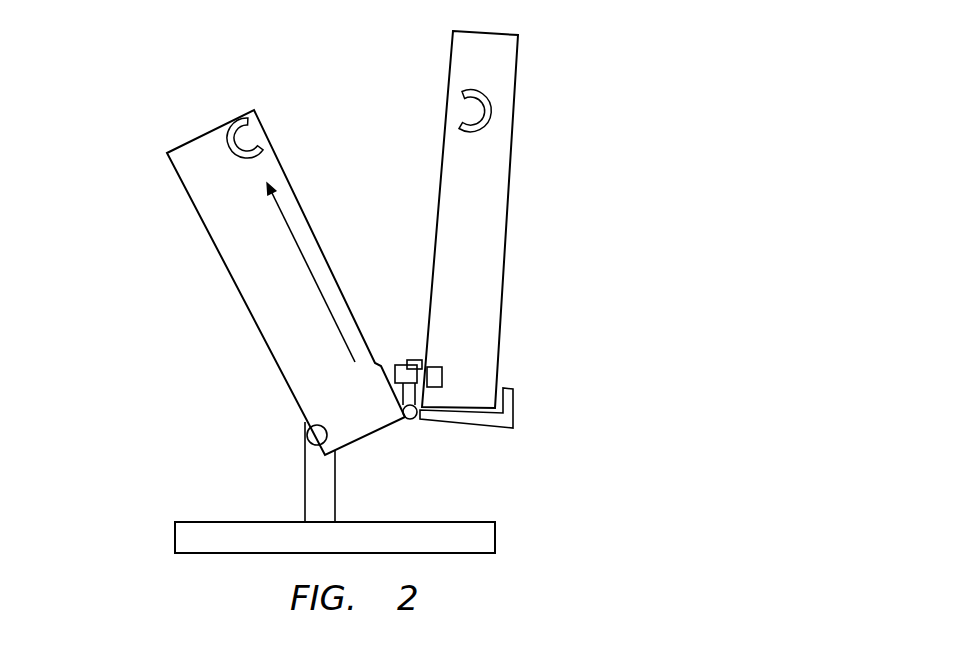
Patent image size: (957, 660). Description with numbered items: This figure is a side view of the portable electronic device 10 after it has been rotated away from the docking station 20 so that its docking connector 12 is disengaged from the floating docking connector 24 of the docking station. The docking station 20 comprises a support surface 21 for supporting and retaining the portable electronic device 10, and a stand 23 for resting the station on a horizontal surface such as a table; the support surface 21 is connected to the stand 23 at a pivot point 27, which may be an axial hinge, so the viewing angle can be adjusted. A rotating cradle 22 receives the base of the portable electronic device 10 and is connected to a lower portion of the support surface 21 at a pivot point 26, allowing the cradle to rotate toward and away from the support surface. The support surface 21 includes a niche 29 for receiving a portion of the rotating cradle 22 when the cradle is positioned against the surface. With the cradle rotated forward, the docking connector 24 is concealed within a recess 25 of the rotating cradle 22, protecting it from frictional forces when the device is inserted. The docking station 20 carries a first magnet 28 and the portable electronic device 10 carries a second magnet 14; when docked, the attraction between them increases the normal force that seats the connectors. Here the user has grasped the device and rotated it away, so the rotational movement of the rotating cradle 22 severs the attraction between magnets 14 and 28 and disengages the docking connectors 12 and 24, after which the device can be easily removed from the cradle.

The portable electronic device 10 is at (565, 248).
The docking connector 12 is at (438, 361).
The second magnet 14 is at (439, 85).
The docking station 20 is at (275, 325).
The support surface 21 is at (216, 272).
The rotating cradle 22 is at (523, 431).
The stand 23 is at (296, 481).
The docking connector 24 is at (408, 382).
The recess 25 is at (429, 396).
The pivot point 26 is at (416, 430).
The pivot point 27 is at (296, 426).
The first magnet 28 is at (273, 121).
The niche 29 is at (392, 352).